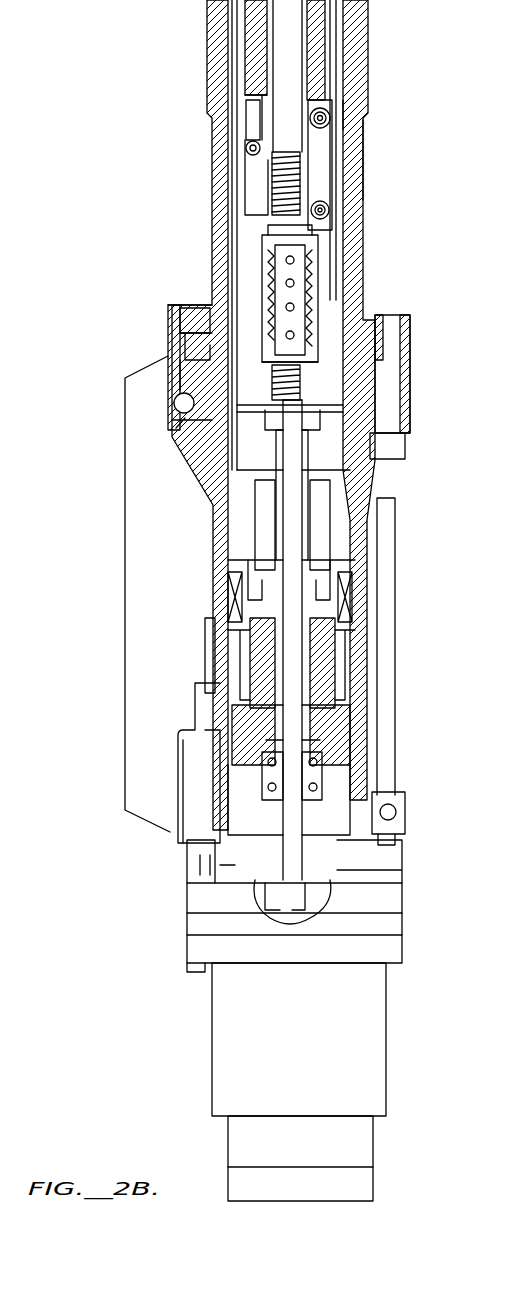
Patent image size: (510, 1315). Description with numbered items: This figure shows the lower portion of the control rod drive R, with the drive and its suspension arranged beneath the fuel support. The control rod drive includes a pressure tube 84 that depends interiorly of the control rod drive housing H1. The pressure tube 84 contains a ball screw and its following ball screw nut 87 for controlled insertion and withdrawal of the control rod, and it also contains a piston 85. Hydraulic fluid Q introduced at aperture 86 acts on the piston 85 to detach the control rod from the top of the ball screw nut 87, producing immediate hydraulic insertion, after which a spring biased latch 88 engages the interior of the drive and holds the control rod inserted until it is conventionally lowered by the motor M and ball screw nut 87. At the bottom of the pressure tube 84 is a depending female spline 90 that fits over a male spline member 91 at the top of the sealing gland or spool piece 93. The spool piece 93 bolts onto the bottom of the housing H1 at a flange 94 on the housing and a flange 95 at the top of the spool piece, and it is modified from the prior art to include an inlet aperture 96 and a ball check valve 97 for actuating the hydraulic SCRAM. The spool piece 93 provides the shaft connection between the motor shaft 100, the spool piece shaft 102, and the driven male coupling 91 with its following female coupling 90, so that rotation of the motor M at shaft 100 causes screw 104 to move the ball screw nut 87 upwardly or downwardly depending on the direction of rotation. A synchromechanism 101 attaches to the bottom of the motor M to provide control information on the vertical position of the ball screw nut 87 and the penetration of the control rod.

The pressure tube 84 is at (232, 72).
The piston 85 is at (323, 76).
The control rod drive R is at (400, 102).
The control rod drive housing H1 is at (364, 156).
The spring biased latch 88 is at (270, 170).
The ball screw nut 87 is at (318, 270).
The hydraulic fluid Q is at (192, 308).
The screw 104 is at (316, 392).
The aperture 86 is at (175, 328).
The flange 94 is at (410, 334).
The inlet aperture 96 is at (176, 400).
The flange 95 is at (410, 398).
The ball check valve 97 is at (176, 432).
The female spline 90 is at (252, 532).
The male spline member 91 is at (290, 538).
The spool piece 93 is at (125, 593).
The spool piece shaft 102 is at (292, 714).
The motor shaft 100 is at (300, 897).
The motor M is at (212, 1025).
The synchromechanism 101 is at (228, 1150).